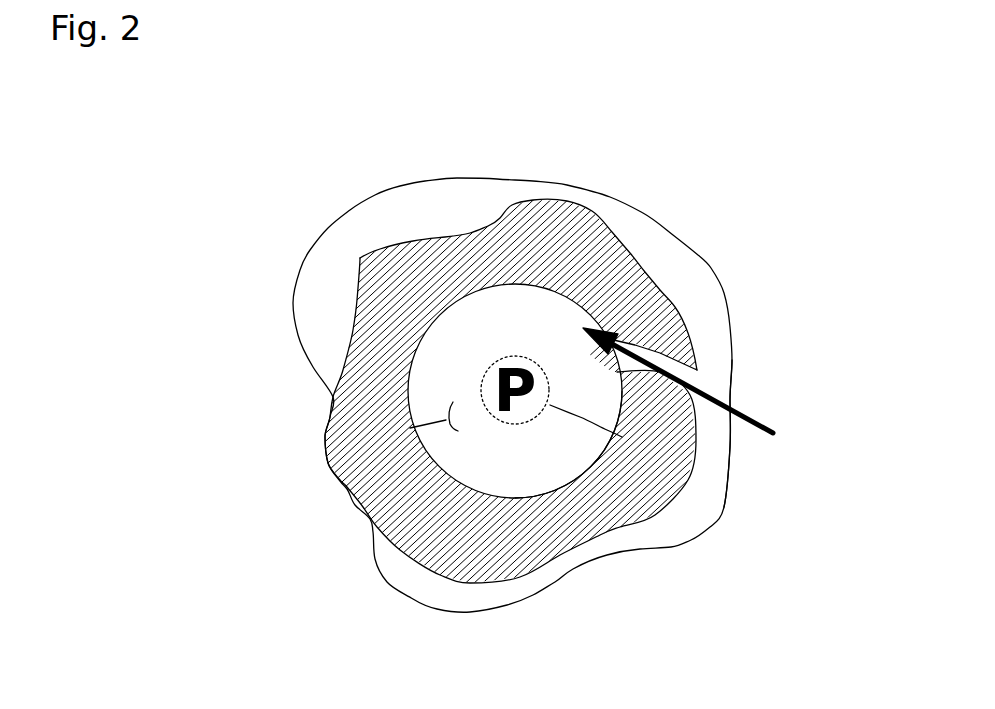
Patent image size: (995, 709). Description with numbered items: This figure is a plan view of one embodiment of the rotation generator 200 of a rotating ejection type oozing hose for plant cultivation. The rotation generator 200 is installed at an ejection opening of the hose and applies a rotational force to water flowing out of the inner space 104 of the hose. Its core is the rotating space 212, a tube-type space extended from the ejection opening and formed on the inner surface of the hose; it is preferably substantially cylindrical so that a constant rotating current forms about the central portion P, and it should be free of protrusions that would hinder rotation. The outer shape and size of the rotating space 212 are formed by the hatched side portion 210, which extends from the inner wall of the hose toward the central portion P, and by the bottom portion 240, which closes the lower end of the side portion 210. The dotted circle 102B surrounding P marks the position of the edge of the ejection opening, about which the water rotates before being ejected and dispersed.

The rotation generator 200 is at (262, 121).
The side portion 210 is at (510, 245).
The rotating space 212 is at (347, 487).
The bottom portion 240 is at (690, 297).
The inner space 104 is at (772, 471).
The dotted circle 102B is at (620, 372).